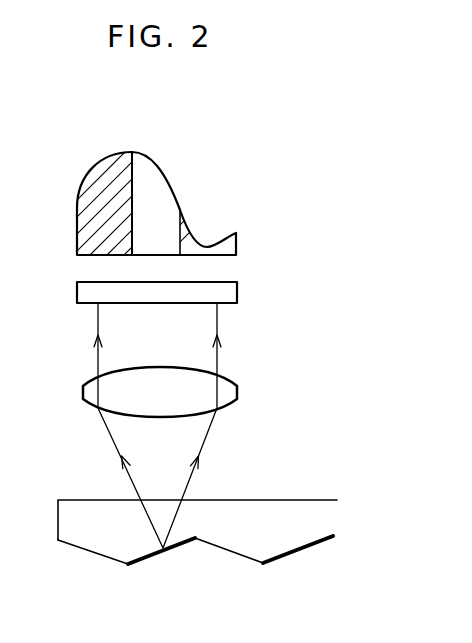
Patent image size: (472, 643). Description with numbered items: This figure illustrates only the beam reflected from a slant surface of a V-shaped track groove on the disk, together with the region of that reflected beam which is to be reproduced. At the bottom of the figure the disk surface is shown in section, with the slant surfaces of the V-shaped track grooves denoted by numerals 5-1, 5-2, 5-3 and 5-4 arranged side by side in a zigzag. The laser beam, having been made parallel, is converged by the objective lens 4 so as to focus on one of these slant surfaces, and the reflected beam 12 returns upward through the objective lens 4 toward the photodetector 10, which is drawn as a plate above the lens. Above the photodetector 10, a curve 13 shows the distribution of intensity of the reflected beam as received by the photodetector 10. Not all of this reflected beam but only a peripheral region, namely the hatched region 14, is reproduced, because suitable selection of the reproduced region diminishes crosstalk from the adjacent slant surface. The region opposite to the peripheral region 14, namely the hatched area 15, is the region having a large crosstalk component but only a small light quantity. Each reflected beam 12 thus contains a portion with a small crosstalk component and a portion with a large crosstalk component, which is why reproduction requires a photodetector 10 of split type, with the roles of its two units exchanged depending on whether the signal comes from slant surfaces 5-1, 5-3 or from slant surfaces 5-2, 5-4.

The intensity distribution curve 13 is at (166, 168).
The peripheral region 14 is at (110, 177).
The large-crosstalk region 15 is at (220, 237).
The photodetector 10 is at (233, 290).
The objective lens 4 is at (237, 392).
The reflected beam 12 is at (204, 438).
The slant surface 5-1 is at (93, 555).
The slant surface 5-2 is at (153, 555).
The slant surface 5-3 is at (235, 555).
The slant surface 5-4 is at (304, 548).